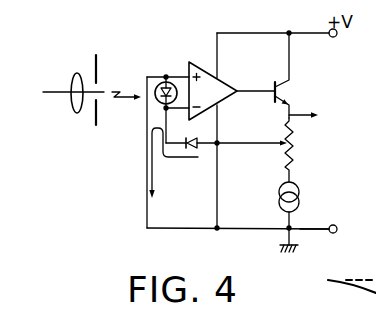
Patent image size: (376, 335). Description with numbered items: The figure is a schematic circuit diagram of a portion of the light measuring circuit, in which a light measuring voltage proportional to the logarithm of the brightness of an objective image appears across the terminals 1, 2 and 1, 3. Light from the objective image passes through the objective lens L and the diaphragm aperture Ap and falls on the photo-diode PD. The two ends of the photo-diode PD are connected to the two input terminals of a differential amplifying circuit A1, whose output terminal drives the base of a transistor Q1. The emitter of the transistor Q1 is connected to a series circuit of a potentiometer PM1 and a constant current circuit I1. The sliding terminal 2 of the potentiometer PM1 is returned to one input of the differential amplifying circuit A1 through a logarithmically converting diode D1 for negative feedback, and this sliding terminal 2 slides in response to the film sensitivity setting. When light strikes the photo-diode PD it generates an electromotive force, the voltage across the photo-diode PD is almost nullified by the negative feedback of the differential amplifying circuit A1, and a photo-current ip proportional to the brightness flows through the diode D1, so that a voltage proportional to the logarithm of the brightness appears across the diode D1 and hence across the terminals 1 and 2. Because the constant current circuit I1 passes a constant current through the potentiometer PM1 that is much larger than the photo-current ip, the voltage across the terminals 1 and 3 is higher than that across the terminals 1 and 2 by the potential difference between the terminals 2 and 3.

The terminal 1 is at (313, 232).
The sliding terminal 2 is at (255, 144).
The terminal 3 is at (304, 110).
The objective lens L is at (73, 81).
The diaphragm aperture Ap is at (96, 56).
The photo-diode PD is at (163, 98).
The differential amplifying circuit A1 is at (210, 89).
The transistor Q1 is at (306, 90).
The potentiometer PM1 is at (328, 142).
The logarithmically converting diode D1 is at (193, 151).
The photo-current ip is at (173, 163).
The constant current circuit I1 is at (316, 193).